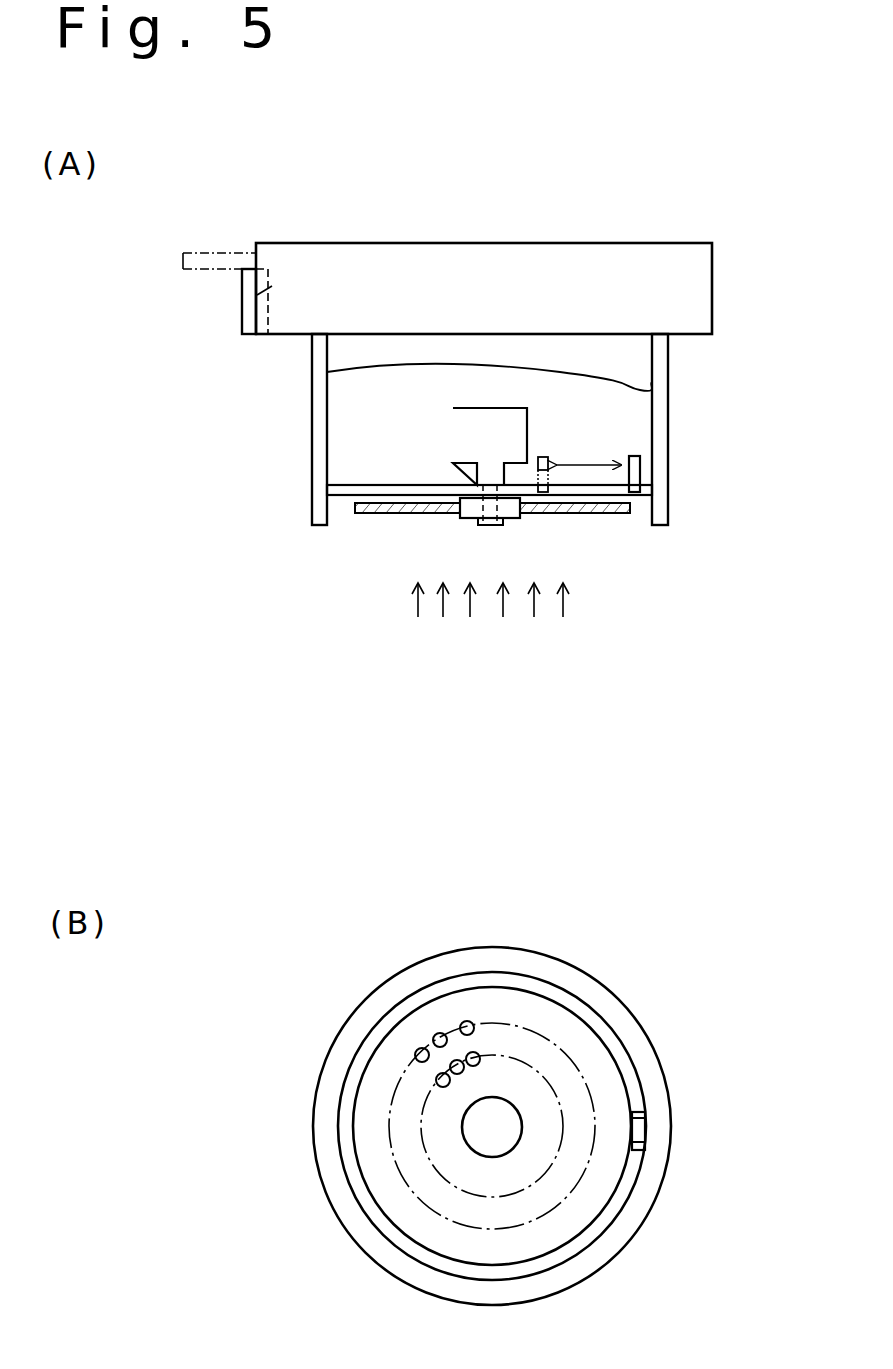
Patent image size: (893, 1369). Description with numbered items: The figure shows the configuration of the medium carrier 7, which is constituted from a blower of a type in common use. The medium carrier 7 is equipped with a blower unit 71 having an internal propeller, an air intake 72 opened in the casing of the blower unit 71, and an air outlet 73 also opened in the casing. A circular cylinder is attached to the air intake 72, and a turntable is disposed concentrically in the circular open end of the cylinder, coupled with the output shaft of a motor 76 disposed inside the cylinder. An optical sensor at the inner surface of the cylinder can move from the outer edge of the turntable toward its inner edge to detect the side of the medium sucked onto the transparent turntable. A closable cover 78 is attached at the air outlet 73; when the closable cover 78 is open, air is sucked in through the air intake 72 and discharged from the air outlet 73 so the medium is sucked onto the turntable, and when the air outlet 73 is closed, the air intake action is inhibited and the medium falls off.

The medium carrier 7 is at (740, 236).
The blower unit 71 is at (687, 303).
The air intake 72 is at (652, 388).
The air outlet 73 is at (276, 276).
The motor 76 is at (453, 437).
The closable cover 78 is at (242, 305).